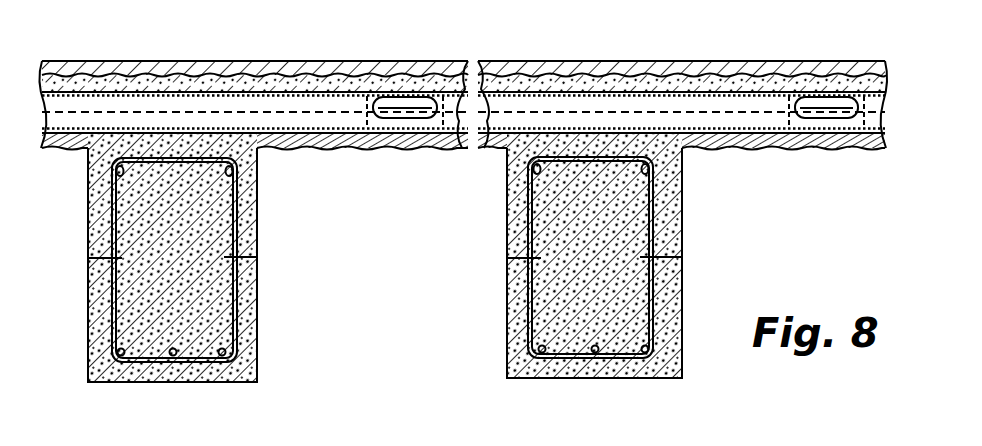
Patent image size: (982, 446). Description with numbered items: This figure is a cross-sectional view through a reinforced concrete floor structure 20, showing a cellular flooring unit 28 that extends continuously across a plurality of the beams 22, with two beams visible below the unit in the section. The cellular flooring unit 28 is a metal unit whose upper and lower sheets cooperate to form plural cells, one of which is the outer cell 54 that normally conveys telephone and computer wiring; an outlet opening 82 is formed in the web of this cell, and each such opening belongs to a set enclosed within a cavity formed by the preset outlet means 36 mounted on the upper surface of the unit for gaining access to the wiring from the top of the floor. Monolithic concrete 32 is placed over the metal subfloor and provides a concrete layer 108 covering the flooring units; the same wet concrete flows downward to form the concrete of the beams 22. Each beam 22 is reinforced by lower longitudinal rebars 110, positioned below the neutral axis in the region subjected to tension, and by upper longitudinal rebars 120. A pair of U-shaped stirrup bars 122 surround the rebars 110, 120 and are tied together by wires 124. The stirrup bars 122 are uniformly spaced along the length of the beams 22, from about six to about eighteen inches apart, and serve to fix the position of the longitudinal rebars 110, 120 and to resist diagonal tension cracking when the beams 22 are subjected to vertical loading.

The reinforced concrete floor structure 20 is at (826, 42).
The beam 22 is at (272, 357).
The cellular flooring unit 28 is at (757, 147).
The monolithic concrete 32 is at (183, 56).
The preset outlet means 36 is at (380, 52).
The outer cell 54 is at (89, 102).
The outlet opening 82 is at (405, 118).
The concrete layer 108 is at (462, 61).
The lower longitudinal rebar 110 is at (124, 356).
The upper longitudinal rebar 120 is at (119, 177).
The U-shaped stirrup bar 122 is at (237, 224).
The wire 124 is at (88, 258).